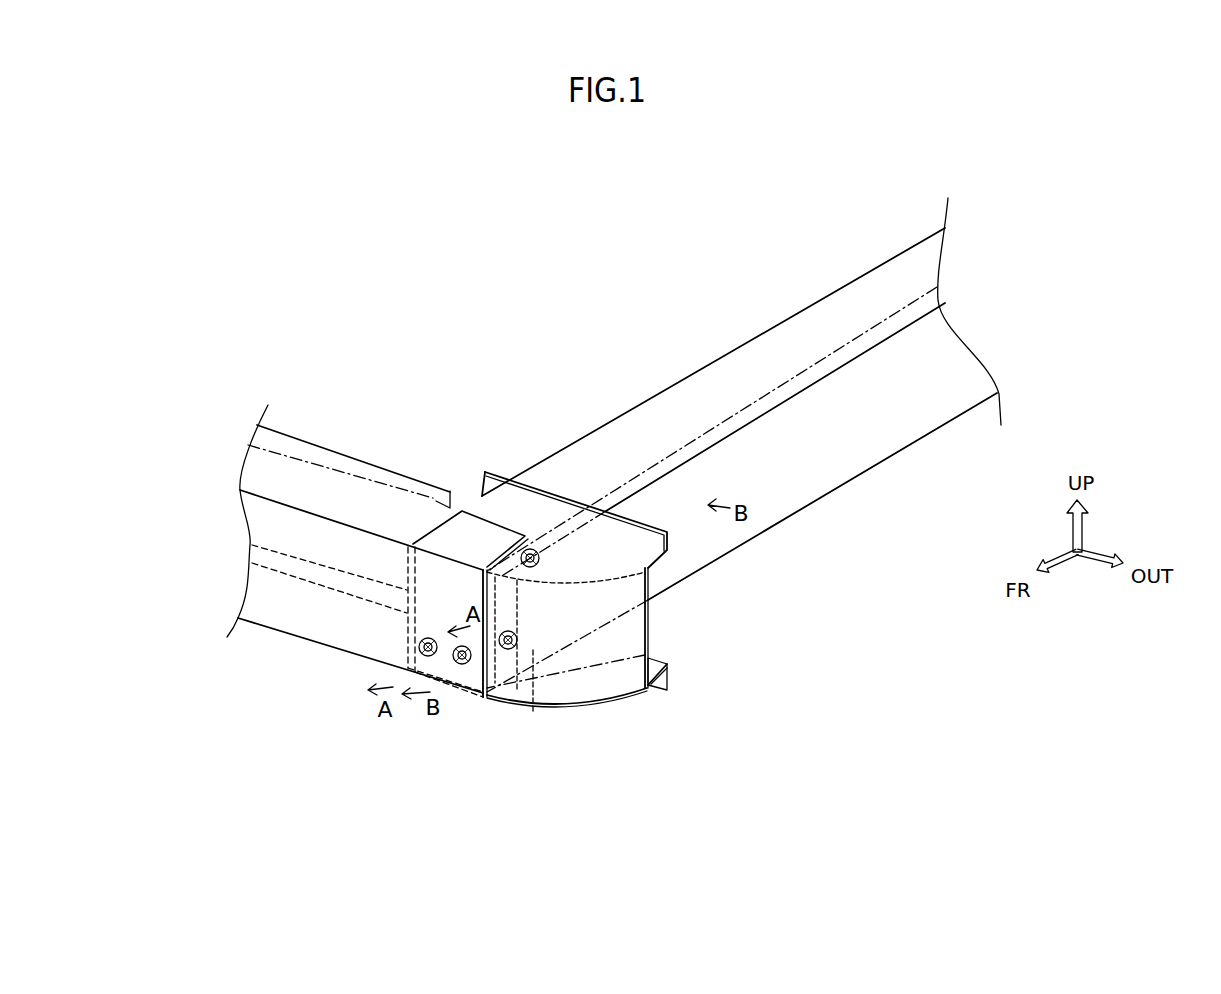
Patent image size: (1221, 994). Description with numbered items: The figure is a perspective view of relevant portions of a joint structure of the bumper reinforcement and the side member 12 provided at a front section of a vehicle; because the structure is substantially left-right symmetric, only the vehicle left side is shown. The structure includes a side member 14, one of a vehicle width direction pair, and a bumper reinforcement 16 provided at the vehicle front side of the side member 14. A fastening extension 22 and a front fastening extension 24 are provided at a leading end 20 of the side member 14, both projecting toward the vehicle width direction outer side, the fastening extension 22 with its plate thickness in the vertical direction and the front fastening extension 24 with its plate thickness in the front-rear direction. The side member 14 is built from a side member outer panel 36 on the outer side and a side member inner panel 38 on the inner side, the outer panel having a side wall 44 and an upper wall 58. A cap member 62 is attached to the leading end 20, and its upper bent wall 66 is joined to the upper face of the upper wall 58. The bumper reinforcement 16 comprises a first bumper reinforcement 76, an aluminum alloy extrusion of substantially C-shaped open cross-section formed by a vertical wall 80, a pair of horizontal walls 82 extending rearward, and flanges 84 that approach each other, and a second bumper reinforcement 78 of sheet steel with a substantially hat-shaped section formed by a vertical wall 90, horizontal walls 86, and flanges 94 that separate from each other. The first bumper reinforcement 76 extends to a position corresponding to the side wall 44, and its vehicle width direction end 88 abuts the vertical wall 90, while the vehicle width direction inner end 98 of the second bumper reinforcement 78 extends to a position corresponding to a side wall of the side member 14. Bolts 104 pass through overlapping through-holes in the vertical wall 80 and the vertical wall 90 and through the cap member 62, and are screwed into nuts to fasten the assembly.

The joint structure of the bumper reinforcement and the side member 12 is at (517, 280).
The side member 14 is at (762, 304).
The bumper reinforcement 16 is at (283, 637).
The leading end 20 is at (533, 692).
The fastening extension 22 is at (560, 530).
The front fastening extension 24 is at (499, 702).
The side member outer panel 36 is at (707, 570).
The side member inner panel 38 is at (696, 365).
The side wall 44 is at (760, 467).
The upper wall 58 is at (645, 456).
The cap member 62 is at (535, 527).
The upper bent wall 66 is at (415, 538).
The first bumper reinforcement 76 is at (307, 444).
The second bumper reinforcement 78 is at (605, 682).
The vertical wall 80 is at (323, 620).
The horizontal walls 82 is at (313, 511).
The flanges 84 is at (450, 496).
The horizontal walls 86 is at (565, 573).
The vehicle width direction end 88 is at (470, 583).
The vertical wall 90 is at (572, 604).
The flanges 94 is at (664, 528).
The vehicle width direction inner end 98 is at (485, 513).
The bolts 104 is at (531, 568).